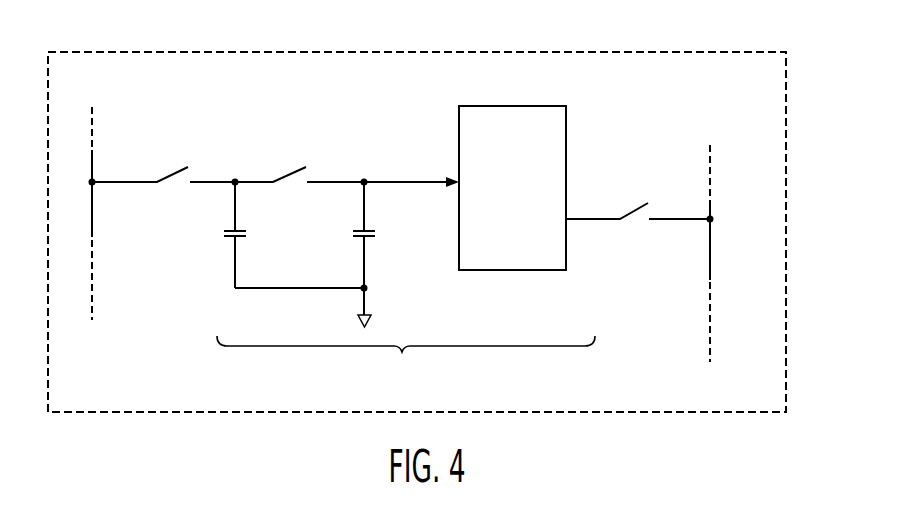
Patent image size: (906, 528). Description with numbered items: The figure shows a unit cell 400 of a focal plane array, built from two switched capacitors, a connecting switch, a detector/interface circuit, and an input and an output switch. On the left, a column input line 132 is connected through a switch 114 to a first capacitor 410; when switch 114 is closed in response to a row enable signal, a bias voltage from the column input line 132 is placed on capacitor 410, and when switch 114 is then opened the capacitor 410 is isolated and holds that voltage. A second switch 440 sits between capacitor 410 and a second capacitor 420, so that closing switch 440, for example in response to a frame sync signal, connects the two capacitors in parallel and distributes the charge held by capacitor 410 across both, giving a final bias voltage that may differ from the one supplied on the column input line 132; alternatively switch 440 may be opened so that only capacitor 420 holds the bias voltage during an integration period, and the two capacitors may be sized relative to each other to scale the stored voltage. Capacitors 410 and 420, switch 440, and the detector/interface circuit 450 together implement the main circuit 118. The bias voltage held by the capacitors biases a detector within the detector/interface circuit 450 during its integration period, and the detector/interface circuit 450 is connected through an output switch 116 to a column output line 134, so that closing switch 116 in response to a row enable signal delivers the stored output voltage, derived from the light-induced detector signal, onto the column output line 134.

The unit cell 400 is at (722, 52).
The switch 114 is at (170, 167).
The switch 440 is at (287, 167).
The capacitor 410 is at (249, 233).
The capacitor 420 is at (378, 233).
The main circuit 118 is at (406, 336).
The detector/interface circuit 450 is at (498, 254).
The output switch 116 is at (630, 202).
The column input line 132 is at (94, 298).
The column output line 134 is at (712, 340).